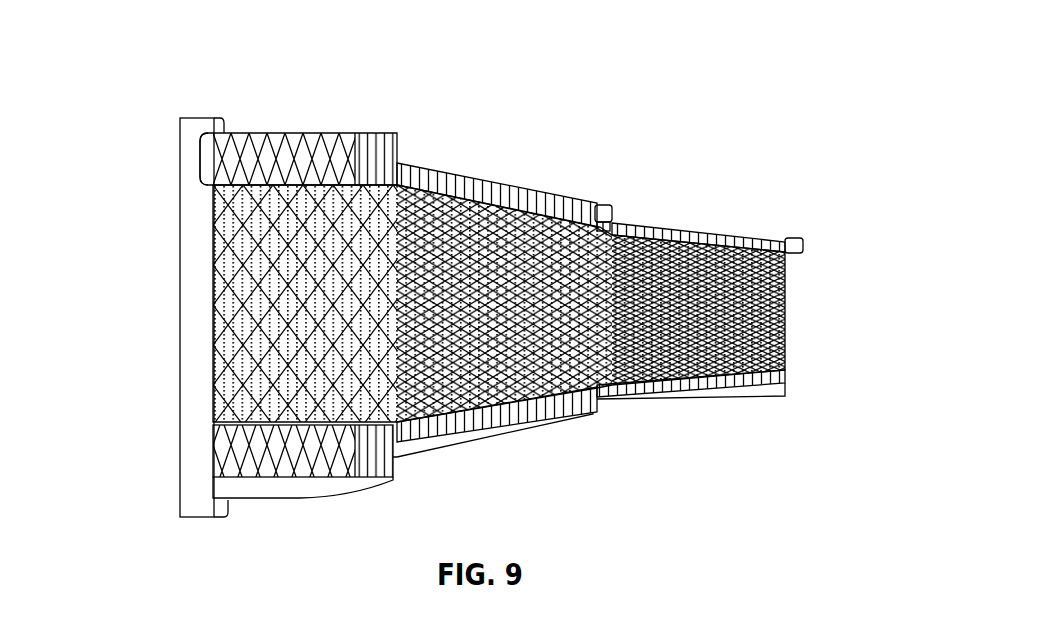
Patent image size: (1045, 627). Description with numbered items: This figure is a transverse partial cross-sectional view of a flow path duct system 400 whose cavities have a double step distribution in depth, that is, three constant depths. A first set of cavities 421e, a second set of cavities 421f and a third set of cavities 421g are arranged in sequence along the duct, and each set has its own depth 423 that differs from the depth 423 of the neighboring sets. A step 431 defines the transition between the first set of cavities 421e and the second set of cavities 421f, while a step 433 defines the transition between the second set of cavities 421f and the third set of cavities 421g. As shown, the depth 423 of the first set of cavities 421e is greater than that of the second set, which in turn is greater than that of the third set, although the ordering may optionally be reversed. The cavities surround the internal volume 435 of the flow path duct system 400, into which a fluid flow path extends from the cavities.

The flow path duct system 400 is at (168, 72).
The first set of cavities 421e is at (237, 147).
The second set of cavities 421f is at (427, 182).
The third set of cavities 421g is at (679, 235).
The depth 423 is at (205, 157).
The step 431 is at (398, 150).
The step 433 is at (590, 205).
The internal volume 435 is at (245, 341).